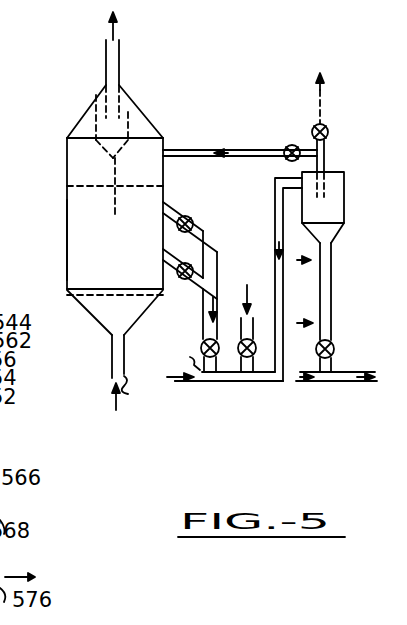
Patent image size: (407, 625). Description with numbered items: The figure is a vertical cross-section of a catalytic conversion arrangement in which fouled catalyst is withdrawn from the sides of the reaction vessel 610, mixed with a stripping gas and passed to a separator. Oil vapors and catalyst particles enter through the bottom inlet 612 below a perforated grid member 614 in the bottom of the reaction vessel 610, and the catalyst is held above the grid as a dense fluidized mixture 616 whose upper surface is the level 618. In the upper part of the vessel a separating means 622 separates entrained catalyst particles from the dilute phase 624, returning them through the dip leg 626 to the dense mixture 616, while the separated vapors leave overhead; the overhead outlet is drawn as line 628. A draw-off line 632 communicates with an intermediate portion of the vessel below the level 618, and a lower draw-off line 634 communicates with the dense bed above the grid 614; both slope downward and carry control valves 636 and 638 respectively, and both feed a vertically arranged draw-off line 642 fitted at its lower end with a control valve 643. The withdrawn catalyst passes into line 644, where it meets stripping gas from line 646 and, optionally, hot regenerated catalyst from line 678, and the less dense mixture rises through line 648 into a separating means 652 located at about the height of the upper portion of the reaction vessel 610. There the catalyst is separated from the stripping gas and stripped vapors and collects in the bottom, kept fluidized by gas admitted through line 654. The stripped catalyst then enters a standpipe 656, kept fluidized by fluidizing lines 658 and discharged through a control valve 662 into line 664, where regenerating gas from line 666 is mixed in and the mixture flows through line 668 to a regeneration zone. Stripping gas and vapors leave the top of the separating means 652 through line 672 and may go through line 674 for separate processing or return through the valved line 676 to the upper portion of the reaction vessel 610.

The reaction vessel 610 is at (67, 147).
The bottom inlet 612 is at (112, 366).
The perforated grid member 614 is at (88, 297).
The dense fluidized mixture 616 is at (67, 226).
The level of fluidized mixture 618 is at (67, 186).
The separating means 622 is at (130, 120).
The dilute phase 624 is at (151, 134).
The dip leg 626 is at (115, 162).
The product outlet conduit 628 is at (120, 56).
The draw-off line 632 is at (171, 202).
The lower draw-off line 634 is at (190, 268).
The control valve 636 is at (193, 222).
The control valve 638 is at (183, 288).
The vertically arranged draw-off line 642 is at (225, 252).
The control valve 643 is at (201, 343).
The line 644 is at (232, 383).
The stripping gas line 646 is at (198, 381).
The line 648 is at (305, 273).
The separating means 652 is at (350, 192).
The fluidizing gas line 654 is at (343, 232).
The standpipe 656 is at (333, 284).
The fluidizing lines 658 is at (299, 279).
The control valve 662 is at (336, 343).
The line 664 is at (335, 382).
The regenerating gas line 666 is at (310, 388).
The line 668 is at (349, 370).
The line 672 is at (326, 153).
The line 674 is at (324, 112).
The valved line 676 is at (235, 150).
The line 678 is at (253, 330).